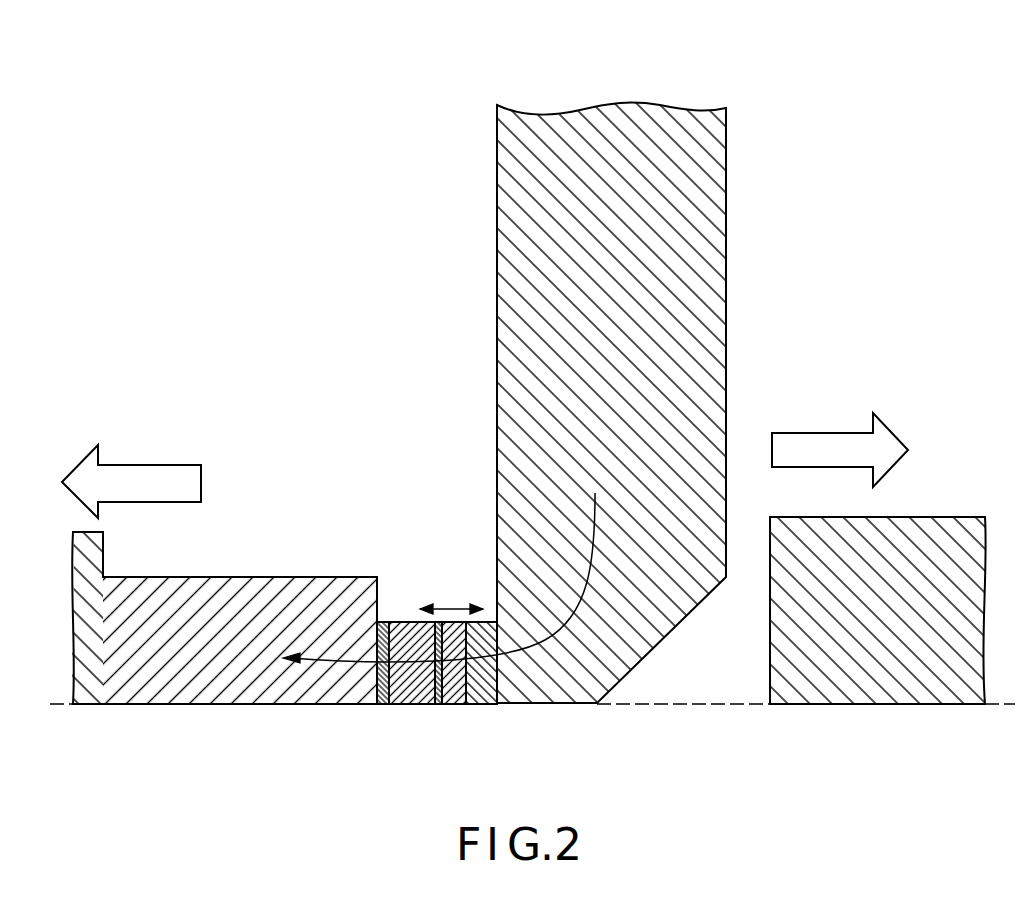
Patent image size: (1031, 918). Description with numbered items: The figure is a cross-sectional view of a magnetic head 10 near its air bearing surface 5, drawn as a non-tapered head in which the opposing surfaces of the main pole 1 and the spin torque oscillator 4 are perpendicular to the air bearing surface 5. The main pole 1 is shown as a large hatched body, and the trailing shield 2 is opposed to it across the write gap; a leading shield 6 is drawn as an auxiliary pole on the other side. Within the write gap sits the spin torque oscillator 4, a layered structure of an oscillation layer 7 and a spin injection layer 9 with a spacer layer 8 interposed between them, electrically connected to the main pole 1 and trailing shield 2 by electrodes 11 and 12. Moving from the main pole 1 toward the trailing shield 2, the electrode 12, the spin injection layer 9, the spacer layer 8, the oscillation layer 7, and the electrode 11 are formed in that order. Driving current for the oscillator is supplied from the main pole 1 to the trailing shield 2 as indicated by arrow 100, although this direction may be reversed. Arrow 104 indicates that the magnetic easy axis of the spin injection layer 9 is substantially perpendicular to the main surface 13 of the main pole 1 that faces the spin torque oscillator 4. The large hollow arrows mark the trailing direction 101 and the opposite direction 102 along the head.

The main pole 1 is at (710, 258).
The trailing shield 2 is at (147, 705).
The spin torque oscillator 4 is at (438, 709).
The air bearing surface 5 is at (724, 705).
The leading shield 6 is at (880, 705).
The oscillation layer 7 is at (408, 705).
The spacer layer 8 is at (437, 705).
The spin injection layer 9 is at (455, 705).
The magnetic head 10 is at (822, 71).
The electrode 11 is at (383, 705).
The electrode 12 is at (492, 686).
The main surface 13 is at (499, 641).
The arrow 100 is at (583, 568).
The trailing direction 101 is at (143, 464).
The movement direction of second substrate 102 is at (825, 432).
The arrow 104 is at (452, 606).